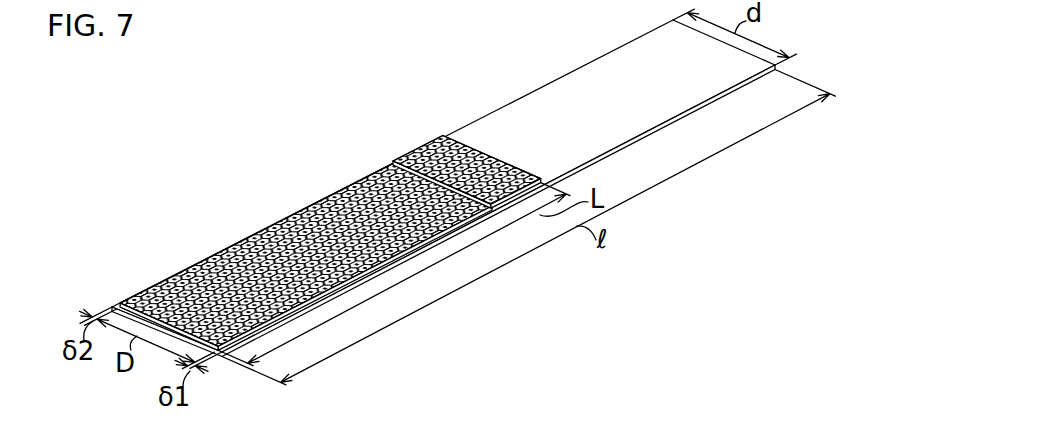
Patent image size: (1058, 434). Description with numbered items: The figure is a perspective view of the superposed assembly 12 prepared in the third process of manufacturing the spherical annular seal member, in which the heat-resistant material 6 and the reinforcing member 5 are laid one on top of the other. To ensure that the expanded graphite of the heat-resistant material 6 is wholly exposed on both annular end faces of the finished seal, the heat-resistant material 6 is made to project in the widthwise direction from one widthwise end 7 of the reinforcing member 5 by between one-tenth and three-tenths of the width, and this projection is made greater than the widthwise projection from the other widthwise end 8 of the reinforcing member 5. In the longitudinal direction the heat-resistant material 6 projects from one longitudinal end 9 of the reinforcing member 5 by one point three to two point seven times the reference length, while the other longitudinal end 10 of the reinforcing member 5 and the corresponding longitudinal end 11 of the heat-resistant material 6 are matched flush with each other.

The reinforcing member 5 is at (293, 254).
The heat-resistant material 6 is at (443, 206).
The one widthwise end of the reinforcing member 7 is at (222, 357).
The other widthwise end of the reinforcing member 8 is at (426, 157).
The one longitudinal end of the reinforcing member 9 is at (467, 156).
The other longitudinal end of the reinforcing member 10 is at (139, 298).
The longitudinal end of the heat-resistant material 11 is at (119, 303).
The superposed assembly 12 is at (435, 206).